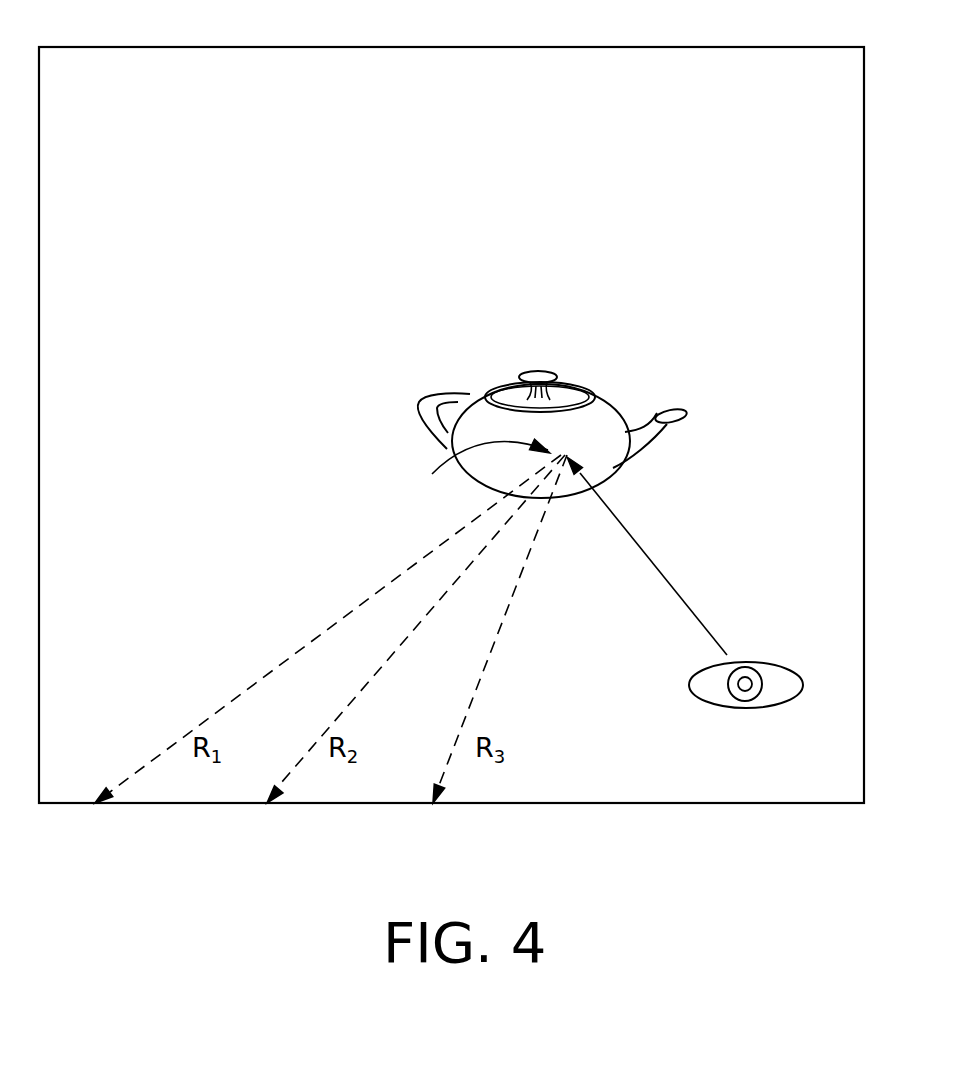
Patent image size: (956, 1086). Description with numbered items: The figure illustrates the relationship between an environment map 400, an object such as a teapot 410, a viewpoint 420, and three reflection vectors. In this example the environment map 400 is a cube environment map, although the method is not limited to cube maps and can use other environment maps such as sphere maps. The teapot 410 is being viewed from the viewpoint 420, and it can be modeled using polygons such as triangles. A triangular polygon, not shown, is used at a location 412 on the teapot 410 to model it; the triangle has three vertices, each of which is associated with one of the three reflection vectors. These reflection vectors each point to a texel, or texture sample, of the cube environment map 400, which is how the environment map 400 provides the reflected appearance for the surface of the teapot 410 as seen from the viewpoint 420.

The environment map 400 is at (820, 47).
The teapot 410 is at (602, 393).
The location 412 is at (463, 474).
The viewpoint 420 is at (748, 661).